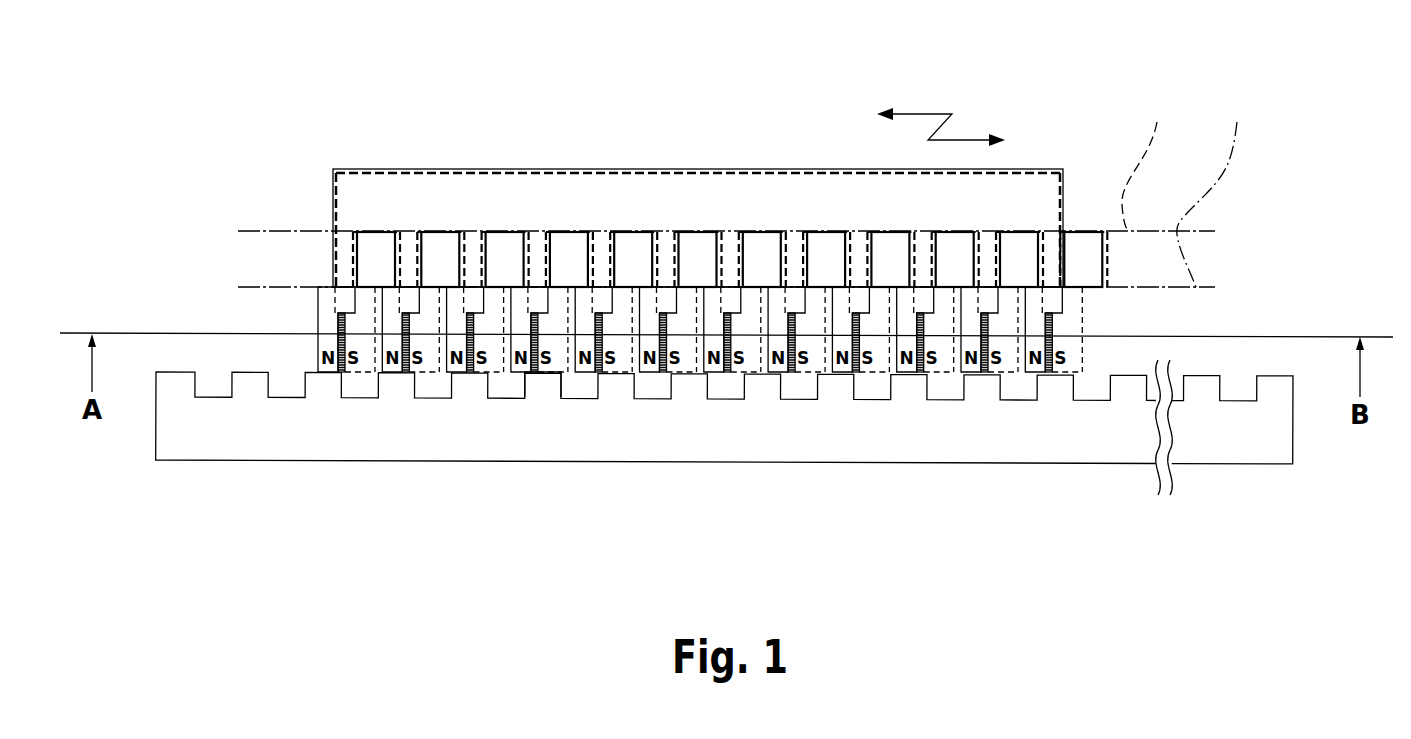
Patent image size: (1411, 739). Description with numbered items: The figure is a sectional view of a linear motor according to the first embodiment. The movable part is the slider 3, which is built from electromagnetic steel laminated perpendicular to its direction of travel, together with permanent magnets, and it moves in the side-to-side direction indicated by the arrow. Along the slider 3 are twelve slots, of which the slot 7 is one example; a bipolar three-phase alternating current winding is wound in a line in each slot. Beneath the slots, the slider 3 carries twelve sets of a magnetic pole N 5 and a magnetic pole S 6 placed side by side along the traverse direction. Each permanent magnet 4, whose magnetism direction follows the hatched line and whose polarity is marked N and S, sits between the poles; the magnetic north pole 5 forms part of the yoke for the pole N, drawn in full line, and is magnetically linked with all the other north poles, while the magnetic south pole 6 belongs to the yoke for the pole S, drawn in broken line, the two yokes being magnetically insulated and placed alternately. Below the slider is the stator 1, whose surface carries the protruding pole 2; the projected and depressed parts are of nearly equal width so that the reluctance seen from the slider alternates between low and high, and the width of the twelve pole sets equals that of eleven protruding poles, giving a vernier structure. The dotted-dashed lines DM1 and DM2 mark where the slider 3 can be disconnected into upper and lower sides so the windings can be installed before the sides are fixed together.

The stator 1 is at (685, 438).
The protruding pole 2 is at (543, 387).
The slider 3 is at (660, 190).
The permanent magnet 4 is at (471, 377).
The magnetic pole N 5 is at (458, 377).
The magnetic pole S 6 is at (480, 377).
The slot 7 is at (505, 238).
The dotted-dashed line DM1 is at (1222, 192).
The dotted-dashed line DM2 is at (1147, 163).